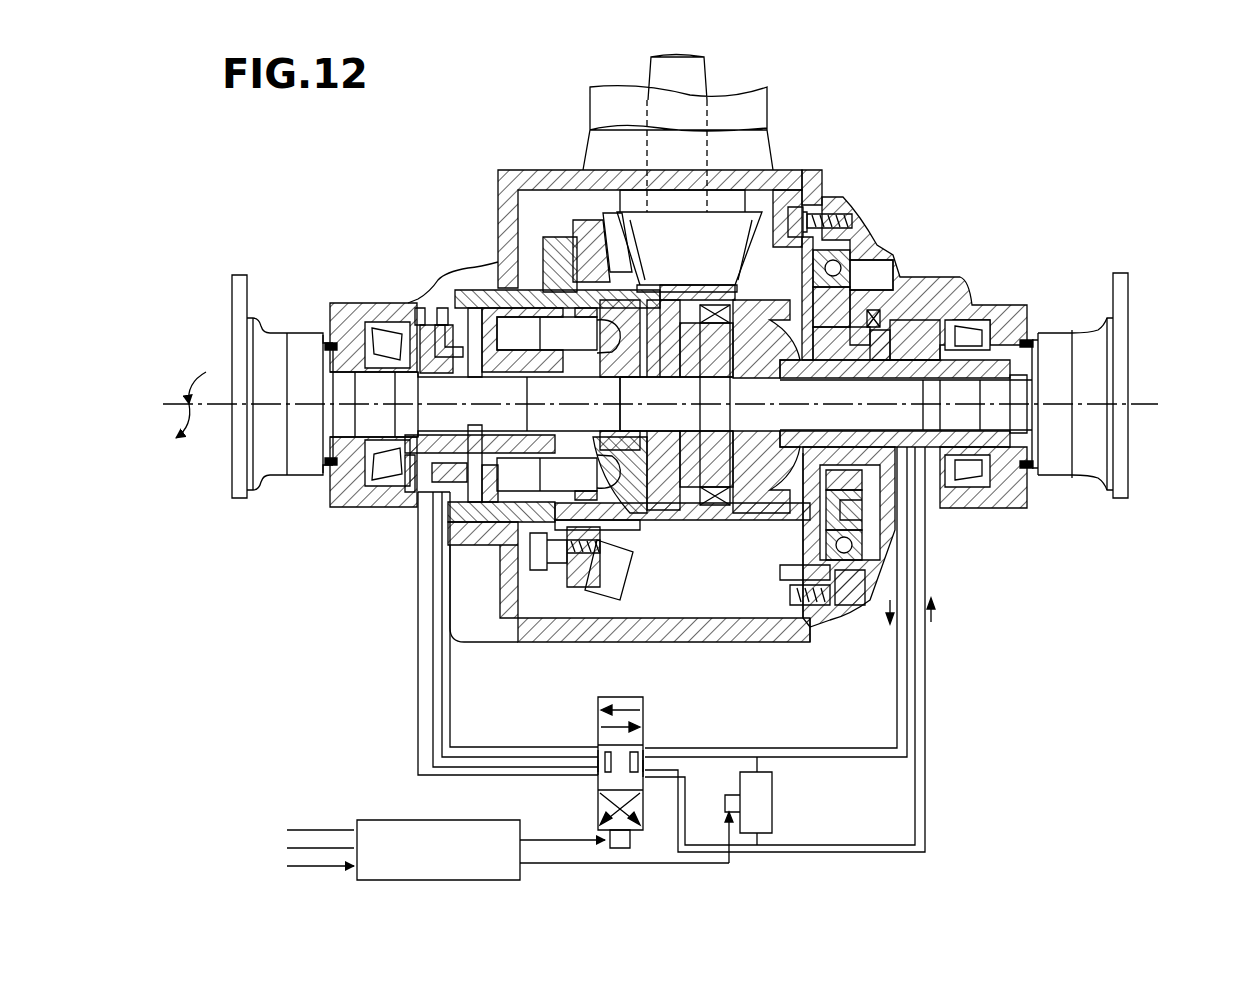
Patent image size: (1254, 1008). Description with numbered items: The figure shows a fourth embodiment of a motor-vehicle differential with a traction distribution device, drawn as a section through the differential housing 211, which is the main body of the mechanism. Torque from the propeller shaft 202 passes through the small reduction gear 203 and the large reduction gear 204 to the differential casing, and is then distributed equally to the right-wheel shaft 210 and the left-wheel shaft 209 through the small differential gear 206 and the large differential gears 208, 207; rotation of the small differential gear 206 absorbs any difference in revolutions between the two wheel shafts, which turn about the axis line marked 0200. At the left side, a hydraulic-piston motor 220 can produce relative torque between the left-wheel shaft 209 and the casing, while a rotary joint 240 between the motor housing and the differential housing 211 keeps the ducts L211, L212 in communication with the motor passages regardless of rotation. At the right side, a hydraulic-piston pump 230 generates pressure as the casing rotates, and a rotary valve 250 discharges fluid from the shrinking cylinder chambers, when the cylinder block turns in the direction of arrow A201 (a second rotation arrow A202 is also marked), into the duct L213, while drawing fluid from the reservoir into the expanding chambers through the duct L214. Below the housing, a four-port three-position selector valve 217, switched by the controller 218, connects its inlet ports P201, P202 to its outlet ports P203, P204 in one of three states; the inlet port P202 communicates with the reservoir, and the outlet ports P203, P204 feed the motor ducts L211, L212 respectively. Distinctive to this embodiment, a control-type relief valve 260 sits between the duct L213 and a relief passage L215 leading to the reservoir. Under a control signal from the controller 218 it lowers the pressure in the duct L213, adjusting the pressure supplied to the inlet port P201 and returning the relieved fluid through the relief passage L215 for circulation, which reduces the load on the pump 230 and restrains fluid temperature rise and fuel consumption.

The propeller shaft 202 is at (697, 78).
The small reduction gear 203 is at (745, 224).
The large reduction gear 204 is at (578, 220).
The small differential gear 206 is at (733, 515).
The large differential gear 207 is at (658, 490).
The large differential gear 208 is at (773, 470).
The left-wheel shaft 209 is at (385, 388).
The right-wheel shaft 210 is at (1020, 384).
The differential housing 211 is at (822, 185).
The selector valve 217 is at (621, 696).
The controller 218 is at (405, 820).
The hydraulic-piston motor 220 is at (468, 285).
The hydraulic-piston pump 230 is at (875, 247).
The rotary joint 240 is at (409, 302).
The rotary valve 250 is at (924, 302).
The control-type relief valve 260 is at (773, 794).
The rotational axis 0200 is at (1142, 400).
The arrow A201 is at (183, 441).
The rotation direction A202 is at (195, 375).
The duct L211 is at (440, 692).
The duct L212 is at (416, 651).
The duct L213 is at (900, 647).
The duct L214 is at (922, 555).
The relief passage L215 is at (822, 852).
The inlet port P201 is at (645, 750).
The inlet port P202 is at (647, 782).
The outlet port P203 is at (597, 750).
The outlet port P204 is at (597, 776).